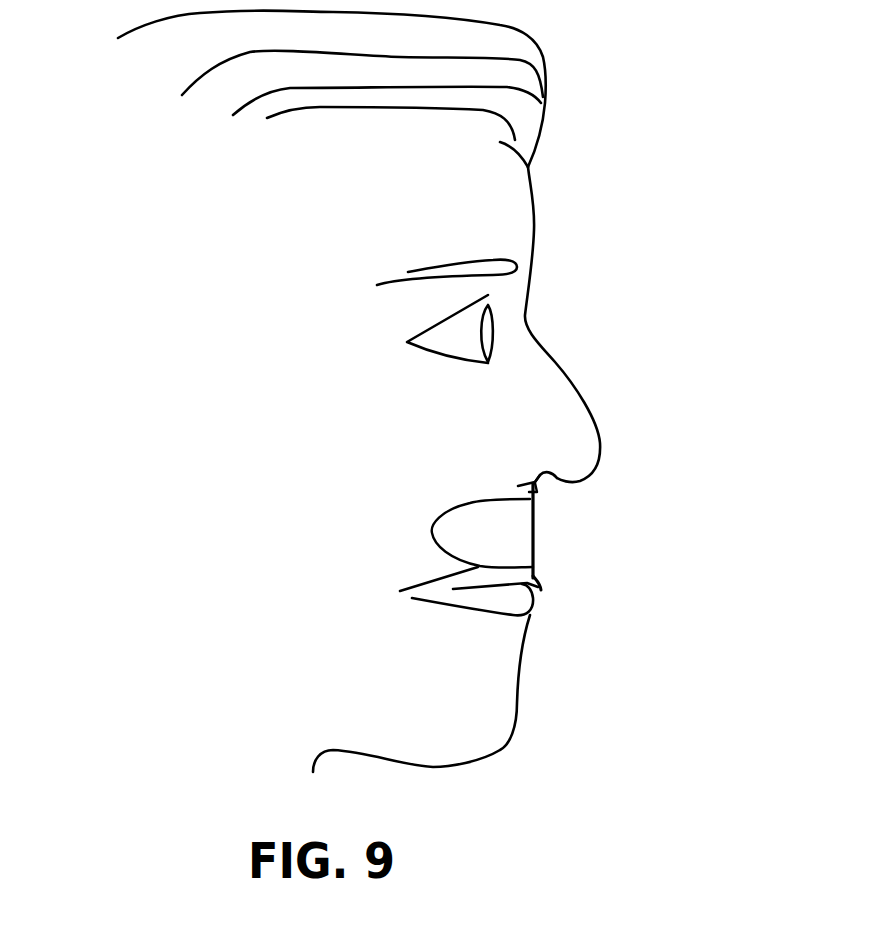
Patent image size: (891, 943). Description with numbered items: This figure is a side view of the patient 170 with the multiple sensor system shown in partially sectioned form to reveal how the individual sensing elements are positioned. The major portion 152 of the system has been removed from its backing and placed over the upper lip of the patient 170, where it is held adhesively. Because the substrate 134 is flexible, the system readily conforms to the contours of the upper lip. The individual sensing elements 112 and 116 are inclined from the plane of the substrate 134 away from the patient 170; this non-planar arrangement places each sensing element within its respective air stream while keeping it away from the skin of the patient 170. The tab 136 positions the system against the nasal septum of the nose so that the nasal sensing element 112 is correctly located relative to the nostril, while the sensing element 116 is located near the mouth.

The patient 170 is at (660, 226).
The major portion 152 is at (460, 533).
The substrate 134 is at (533, 523).
The individual sensing element 112 is at (533, 495).
The tab 136 is at (530, 492).
The individual sensing element 116 is at (537, 577).